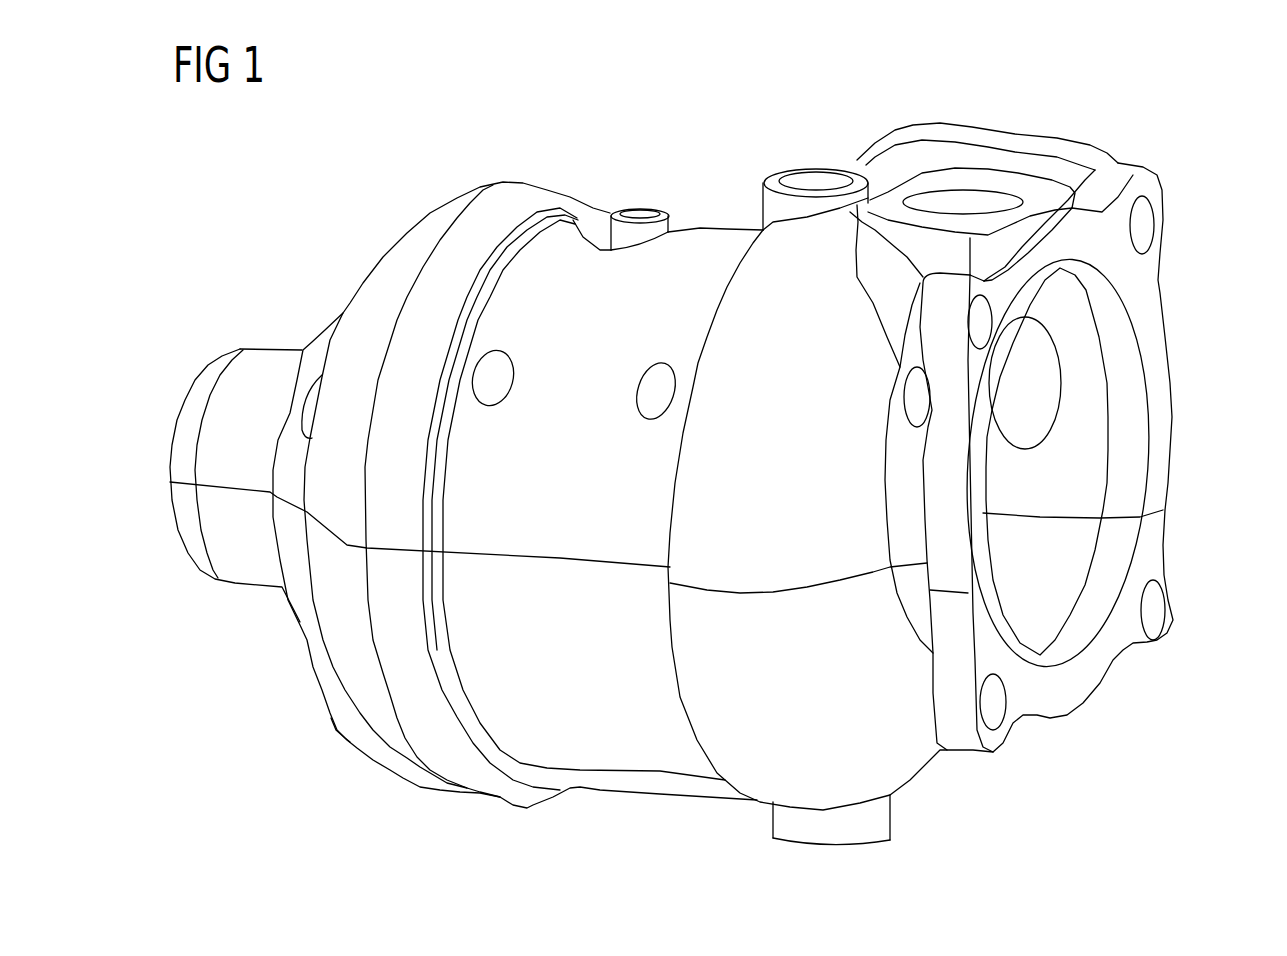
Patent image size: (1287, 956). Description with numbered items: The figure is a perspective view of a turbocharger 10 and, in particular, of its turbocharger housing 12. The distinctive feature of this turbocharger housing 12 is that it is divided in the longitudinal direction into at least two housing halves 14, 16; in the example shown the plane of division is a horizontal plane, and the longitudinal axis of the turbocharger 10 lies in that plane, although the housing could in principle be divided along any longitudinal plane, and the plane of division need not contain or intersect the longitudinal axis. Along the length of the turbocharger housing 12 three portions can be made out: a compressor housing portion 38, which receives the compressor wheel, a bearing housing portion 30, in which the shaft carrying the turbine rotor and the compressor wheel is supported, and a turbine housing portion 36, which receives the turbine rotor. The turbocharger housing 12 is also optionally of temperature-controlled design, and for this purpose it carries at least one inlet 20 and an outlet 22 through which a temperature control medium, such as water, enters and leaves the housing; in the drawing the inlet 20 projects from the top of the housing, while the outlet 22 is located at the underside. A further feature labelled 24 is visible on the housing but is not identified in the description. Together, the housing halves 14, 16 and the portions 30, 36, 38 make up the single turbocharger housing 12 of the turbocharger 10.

The turbocharger 10 is at (1133, 145).
The turbocharger housing 12 is at (942, 111).
The housing half 14 is at (1147, 293).
The housing half 16 is at (1153, 545).
The inlet 20 is at (816, 170).
The outlet 22 is at (880, 818).
The small connection port 24 is at (638, 190).
The bearing housing portion 30 is at (736, 214).
The turbine housing portion 36 is at (1065, 121).
The compressor housing portion 38 is at (473, 170).